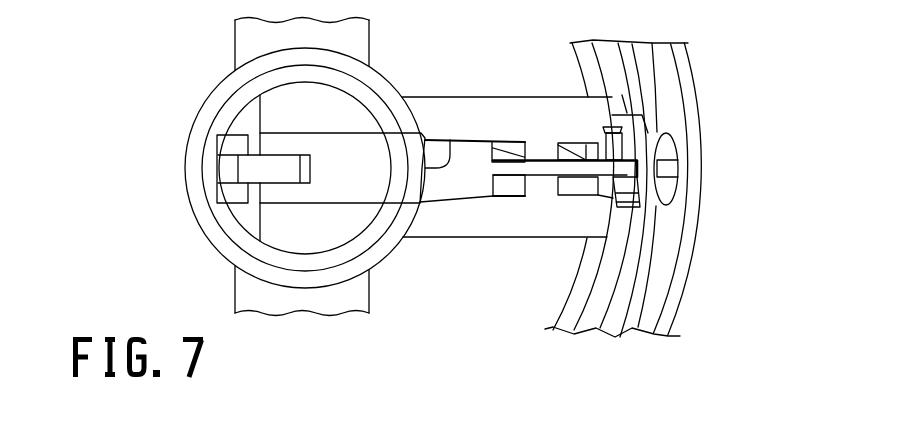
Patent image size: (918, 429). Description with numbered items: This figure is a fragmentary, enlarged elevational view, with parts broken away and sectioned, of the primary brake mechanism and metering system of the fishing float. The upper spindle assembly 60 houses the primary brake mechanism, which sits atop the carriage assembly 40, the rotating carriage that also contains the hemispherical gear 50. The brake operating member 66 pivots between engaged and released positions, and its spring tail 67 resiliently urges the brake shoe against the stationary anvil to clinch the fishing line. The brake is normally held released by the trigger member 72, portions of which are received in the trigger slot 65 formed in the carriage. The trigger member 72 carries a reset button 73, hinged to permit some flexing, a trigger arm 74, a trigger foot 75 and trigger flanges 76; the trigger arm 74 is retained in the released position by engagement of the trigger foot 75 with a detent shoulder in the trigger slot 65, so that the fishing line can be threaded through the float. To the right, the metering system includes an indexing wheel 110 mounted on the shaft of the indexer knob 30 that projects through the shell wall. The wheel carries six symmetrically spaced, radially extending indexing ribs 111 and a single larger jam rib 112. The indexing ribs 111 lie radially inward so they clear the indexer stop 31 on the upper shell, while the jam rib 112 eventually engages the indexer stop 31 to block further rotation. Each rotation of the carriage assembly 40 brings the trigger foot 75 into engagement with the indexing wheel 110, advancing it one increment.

The indexer knob 30 is at (670, 148).
The indexer stop 31 is at (652, 43).
The carriage assembly 40 is at (438, 218).
The hemispherical gear 50 is at (568, 277).
The upper spindle assembly 60 is at (172, 68).
The trigger slot 65 is at (513, 194).
The brake operating member 66 is at (268, 167).
The spring tail 67 is at (217, 158).
The trigger member 72 is at (346, 165).
The reset button 73 is at (450, 140).
The trigger arm 74 is at (507, 158).
The trigger foot 75 is at (592, 172).
The trigger flanges 76 is at (575, 145).
The indexing wheel 110 is at (615, 200).
The indexing ribs 111 is at (622, 210).
The jam rib 112 is at (632, 128).